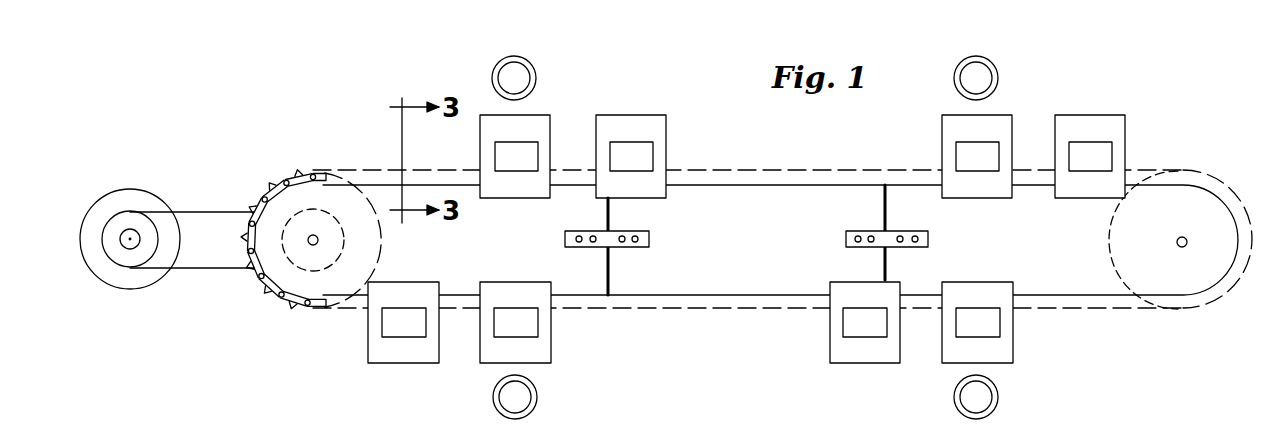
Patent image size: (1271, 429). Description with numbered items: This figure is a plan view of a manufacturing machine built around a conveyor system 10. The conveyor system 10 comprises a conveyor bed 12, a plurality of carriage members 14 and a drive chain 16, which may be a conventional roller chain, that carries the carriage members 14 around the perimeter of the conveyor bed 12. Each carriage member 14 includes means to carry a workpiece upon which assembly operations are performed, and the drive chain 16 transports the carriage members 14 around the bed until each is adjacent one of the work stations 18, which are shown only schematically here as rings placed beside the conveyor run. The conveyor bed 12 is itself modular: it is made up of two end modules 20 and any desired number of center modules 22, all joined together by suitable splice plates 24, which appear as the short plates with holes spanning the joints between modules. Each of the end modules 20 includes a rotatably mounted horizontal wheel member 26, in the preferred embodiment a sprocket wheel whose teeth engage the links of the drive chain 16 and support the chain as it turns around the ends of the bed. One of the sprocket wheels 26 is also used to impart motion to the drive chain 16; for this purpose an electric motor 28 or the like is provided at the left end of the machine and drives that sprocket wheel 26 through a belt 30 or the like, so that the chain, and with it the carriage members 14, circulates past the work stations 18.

The conveyor system 10 is at (782, 245).
The conveyor bed 12 is at (742, 283).
The carriage members 14 is at (667, 134).
The drive chain 16 is at (297, 167).
The work stations 18 is at (491, 75).
The end modules 20 is at (468, 247).
The center modules 22 is at (787, 184).
The splice plates 24 is at (628, 248).
The sprocket wheel 26 is at (296, 309).
The electric motor 28 is at (132, 189).
The belt 30 is at (215, 211).